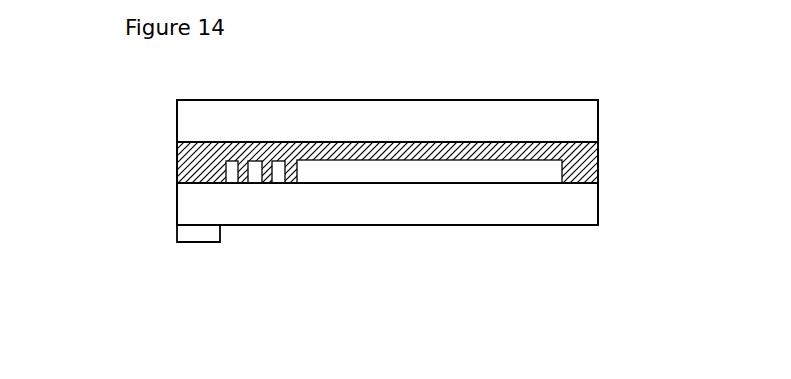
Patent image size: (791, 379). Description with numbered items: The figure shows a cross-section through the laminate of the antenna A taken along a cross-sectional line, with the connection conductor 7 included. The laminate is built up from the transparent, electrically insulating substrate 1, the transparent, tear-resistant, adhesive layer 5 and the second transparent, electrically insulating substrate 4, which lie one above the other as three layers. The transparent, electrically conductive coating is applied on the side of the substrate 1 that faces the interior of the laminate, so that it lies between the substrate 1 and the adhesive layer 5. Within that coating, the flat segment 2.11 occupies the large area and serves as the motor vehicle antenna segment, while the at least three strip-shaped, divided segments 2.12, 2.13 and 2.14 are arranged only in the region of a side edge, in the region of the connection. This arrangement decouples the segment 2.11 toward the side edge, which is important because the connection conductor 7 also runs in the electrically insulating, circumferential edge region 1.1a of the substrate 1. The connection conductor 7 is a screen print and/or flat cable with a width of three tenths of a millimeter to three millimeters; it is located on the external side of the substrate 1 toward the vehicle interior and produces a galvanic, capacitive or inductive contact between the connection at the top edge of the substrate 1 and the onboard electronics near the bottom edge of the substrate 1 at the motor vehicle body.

The antenna A is at (446, 78).
The second transparent, electrically insulating substrate 4 is at (600, 114).
The transparent, tear-resistant, adhesive layer 5 is at (600, 167).
The transparent, electrically insulating substrate 1 is at (579, 205).
The electrically insulating, circumferential edge region 1.1a is at (178, 176).
The connection conductor 7 is at (181, 239).
The flat segment 2.11 is at (358, 172).
The divided flat segment 2.12 is at (281, 185).
The divided flat segment 2.13 is at (256, 185).
The divided flat segment 2.14 is at (231, 185).